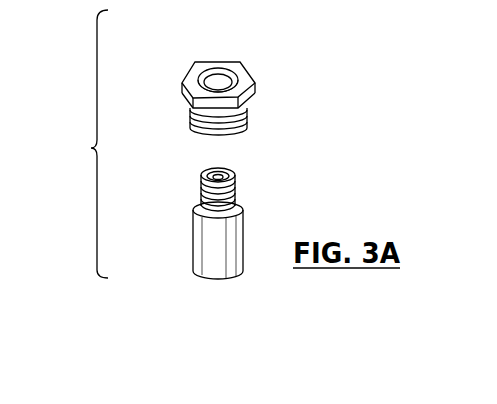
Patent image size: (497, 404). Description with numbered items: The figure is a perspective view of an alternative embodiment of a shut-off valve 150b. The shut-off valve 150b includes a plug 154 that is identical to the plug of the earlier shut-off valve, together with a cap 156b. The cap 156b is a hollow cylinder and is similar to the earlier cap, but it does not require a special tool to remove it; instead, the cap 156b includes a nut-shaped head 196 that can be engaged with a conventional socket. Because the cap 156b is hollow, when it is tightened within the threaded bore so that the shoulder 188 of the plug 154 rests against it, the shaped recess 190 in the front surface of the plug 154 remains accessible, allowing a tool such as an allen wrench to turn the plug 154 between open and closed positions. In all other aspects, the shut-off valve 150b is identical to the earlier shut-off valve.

The shut-off valve 150b is at (185, 139).
The cap 156b is at (267, 91).
The nut-shaped head 196 is at (195, 62).
The plug 154 is at (253, 218).
The shoulder 188 is at (193, 206).
The shaped recess 190 is at (202, 171).